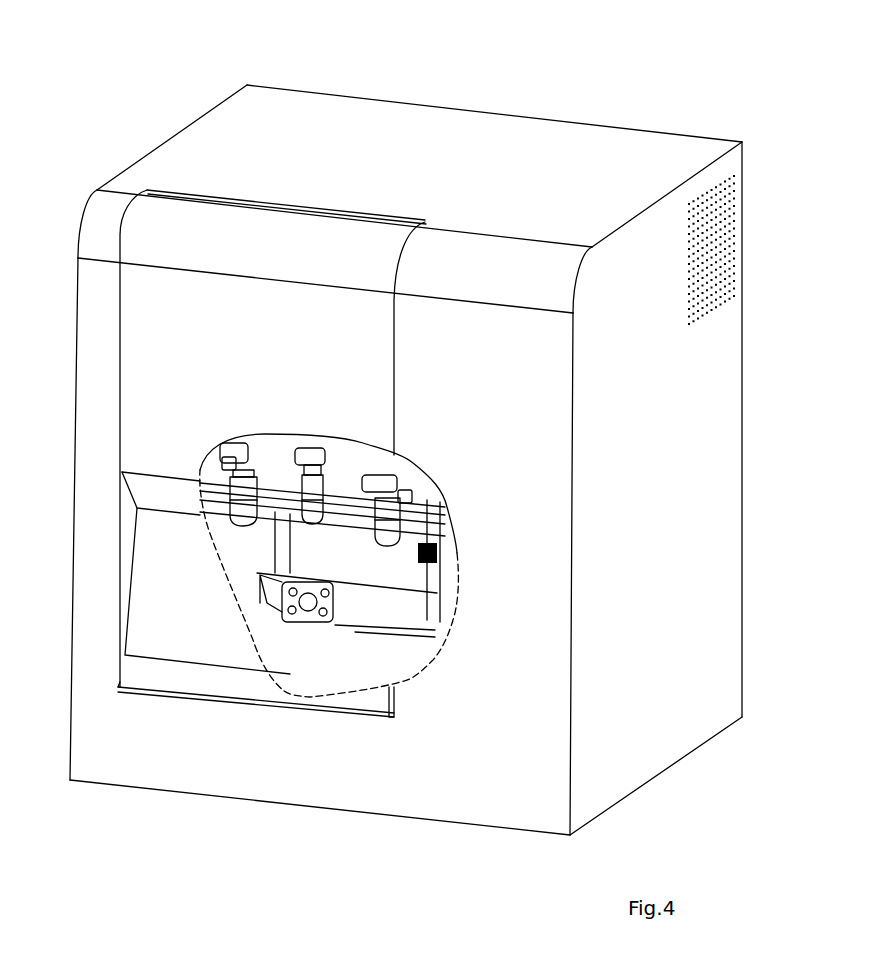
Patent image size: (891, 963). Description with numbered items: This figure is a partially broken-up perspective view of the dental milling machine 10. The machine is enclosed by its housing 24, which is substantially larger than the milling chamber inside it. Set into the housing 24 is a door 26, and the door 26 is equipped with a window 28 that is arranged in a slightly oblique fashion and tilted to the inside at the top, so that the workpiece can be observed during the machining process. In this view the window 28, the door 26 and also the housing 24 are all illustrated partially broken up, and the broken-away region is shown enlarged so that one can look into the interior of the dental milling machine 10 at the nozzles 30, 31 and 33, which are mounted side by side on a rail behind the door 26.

The dental milling machine 10 is at (511, 82).
The housing 24 is at (522, 512).
The door 26 is at (233, 335).
The window 28 is at (205, 640).
The nozzle 30 is at (390, 517).
The nozzle 31 is at (318, 497).
The nozzle 33 is at (232, 503).